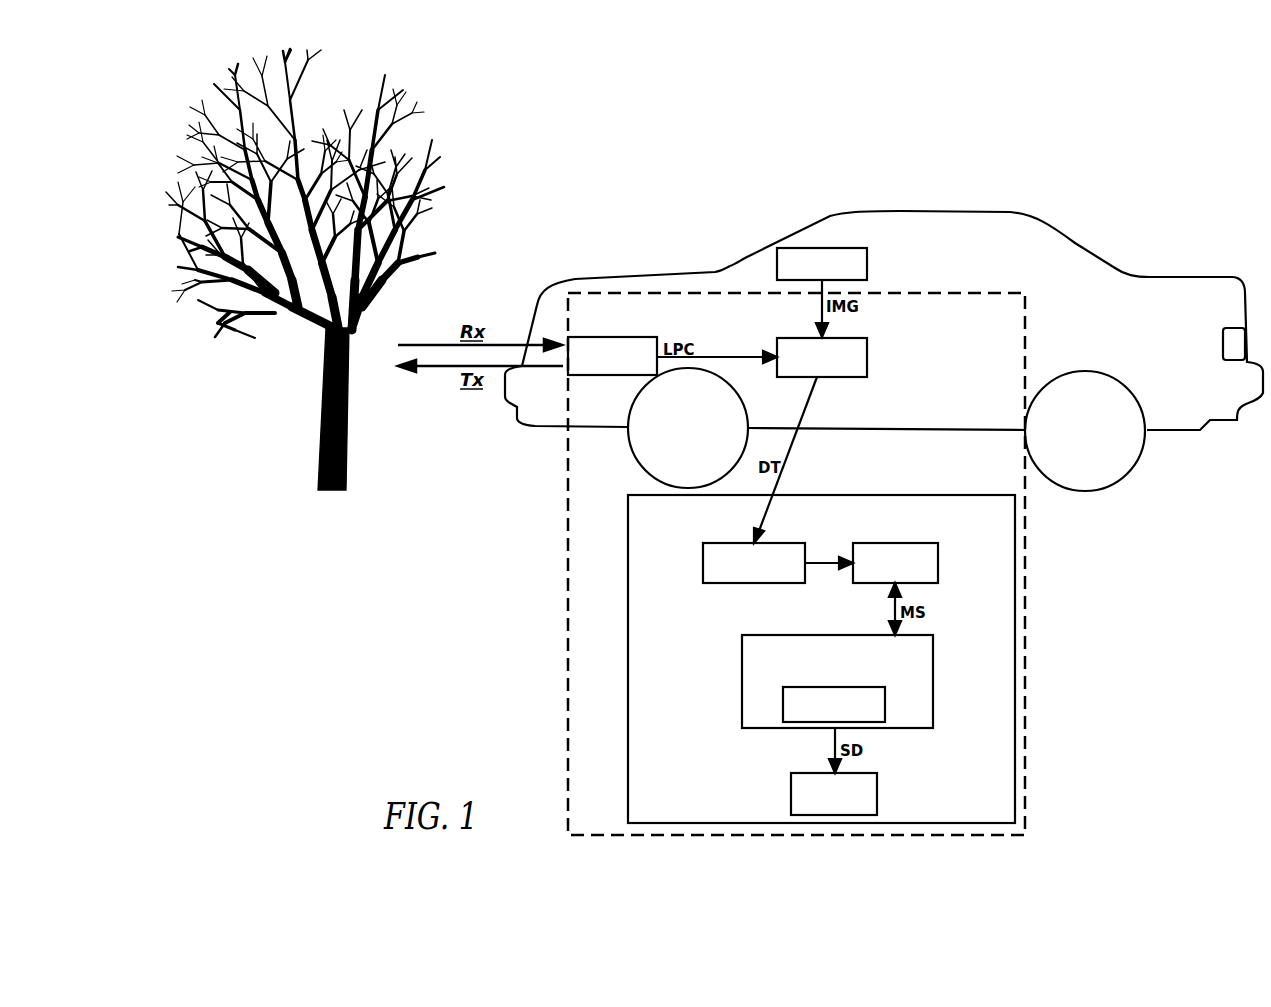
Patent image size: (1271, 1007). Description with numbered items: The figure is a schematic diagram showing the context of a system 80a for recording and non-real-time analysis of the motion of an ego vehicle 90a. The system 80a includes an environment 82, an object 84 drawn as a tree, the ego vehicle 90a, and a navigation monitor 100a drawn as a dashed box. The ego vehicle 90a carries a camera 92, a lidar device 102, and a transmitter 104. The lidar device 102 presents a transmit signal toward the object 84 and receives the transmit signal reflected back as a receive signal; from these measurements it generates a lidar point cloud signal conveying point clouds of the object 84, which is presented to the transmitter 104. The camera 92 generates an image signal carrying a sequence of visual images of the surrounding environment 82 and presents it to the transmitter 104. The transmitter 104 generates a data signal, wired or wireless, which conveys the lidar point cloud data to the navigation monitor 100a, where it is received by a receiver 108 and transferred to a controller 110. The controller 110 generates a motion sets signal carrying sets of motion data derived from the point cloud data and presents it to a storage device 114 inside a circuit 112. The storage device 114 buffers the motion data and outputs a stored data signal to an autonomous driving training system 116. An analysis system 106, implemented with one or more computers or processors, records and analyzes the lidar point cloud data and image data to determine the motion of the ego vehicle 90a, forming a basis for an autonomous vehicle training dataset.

The object 84 is at (388, 149).
The system 80a is at (627, 187).
The environment 82 is at (1120, 143).
The ego vehicle 90a is at (684, 270).
The navigation monitor 100a is at (620, 293).
The lidar device 102 is at (578, 337).
The camera 92 is at (867, 257).
The transmitter 104 is at (867, 350).
The analysis system 106 is at (835, 495).
The receiver 108 is at (703, 553).
The controller 110 is at (938, 554).
The circuit 112 is at (742, 655).
The storage device 114 is at (880, 687).
The autonomous driving training system 116 is at (791, 787).